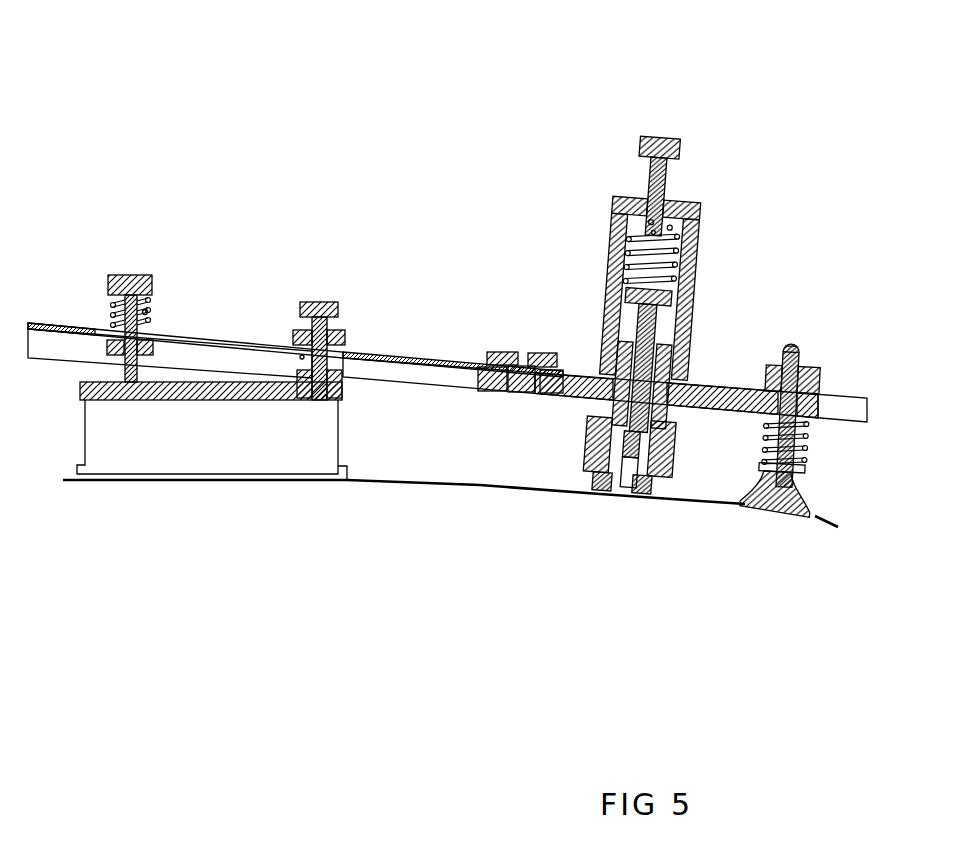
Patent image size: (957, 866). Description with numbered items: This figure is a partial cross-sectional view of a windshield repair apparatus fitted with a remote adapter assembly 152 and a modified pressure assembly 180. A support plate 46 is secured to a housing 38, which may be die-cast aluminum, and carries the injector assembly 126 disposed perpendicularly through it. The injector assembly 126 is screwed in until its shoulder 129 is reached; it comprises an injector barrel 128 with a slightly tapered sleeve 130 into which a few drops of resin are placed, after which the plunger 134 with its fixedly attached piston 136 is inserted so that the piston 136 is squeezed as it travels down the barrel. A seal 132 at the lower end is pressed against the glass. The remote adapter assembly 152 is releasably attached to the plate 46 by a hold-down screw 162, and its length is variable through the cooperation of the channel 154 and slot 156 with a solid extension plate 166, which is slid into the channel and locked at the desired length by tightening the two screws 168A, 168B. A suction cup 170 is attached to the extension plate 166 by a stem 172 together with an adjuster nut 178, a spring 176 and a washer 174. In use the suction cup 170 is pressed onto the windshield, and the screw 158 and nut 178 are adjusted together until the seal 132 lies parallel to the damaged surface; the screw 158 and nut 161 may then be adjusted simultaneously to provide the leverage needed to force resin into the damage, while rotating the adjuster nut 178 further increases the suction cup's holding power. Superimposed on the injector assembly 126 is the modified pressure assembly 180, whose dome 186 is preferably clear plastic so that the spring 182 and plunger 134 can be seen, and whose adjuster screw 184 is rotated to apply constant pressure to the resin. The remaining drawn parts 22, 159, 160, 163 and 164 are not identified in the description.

The engine surface 22 is at (165, 480).
The housing 38 is at (282, 456).
The support plate 46 is at (193, 400).
The injector assembly 126 is at (578, 439).
The injector barrel 128 is at (600, 408).
The shoulder 129 is at (587, 463).
The sleeve 130 is at (625, 487).
The seal 132 is at (612, 497).
The plunger 134 is at (640, 313).
The piston 136 is at (632, 485).
The remote adapter assembly 152 is at (378, 173).
The channel 154 is at (60, 325).
The slot 156 is at (230, 338).
The screw 158 is at (143, 275).
The spring coil end 159 is at (148, 312).
The lock nut 160 is at (107, 342).
The nut 161 is at (345, 327).
The hold-down screw 162 is at (302, 357).
The flexure plate 163 is at (250, 363).
The leaf spring 164 is at (343, 377).
The extension plate 166 is at (712, 388).
The screw 168A is at (502, 352).
The screw 168B is at (547, 353).
The suction cup 170 is at (770, 517).
The stem 172 is at (790, 348).
The washer 174 is at (762, 463).
The spring 176 is at (773, 430).
The adjuster nut 178 is at (779, 345).
The modified pressure assembly 180 is at (569, 63).
The spring 182 is at (627, 272).
The adjuster screw 184 is at (660, 137).
The dome 186 is at (607, 233).